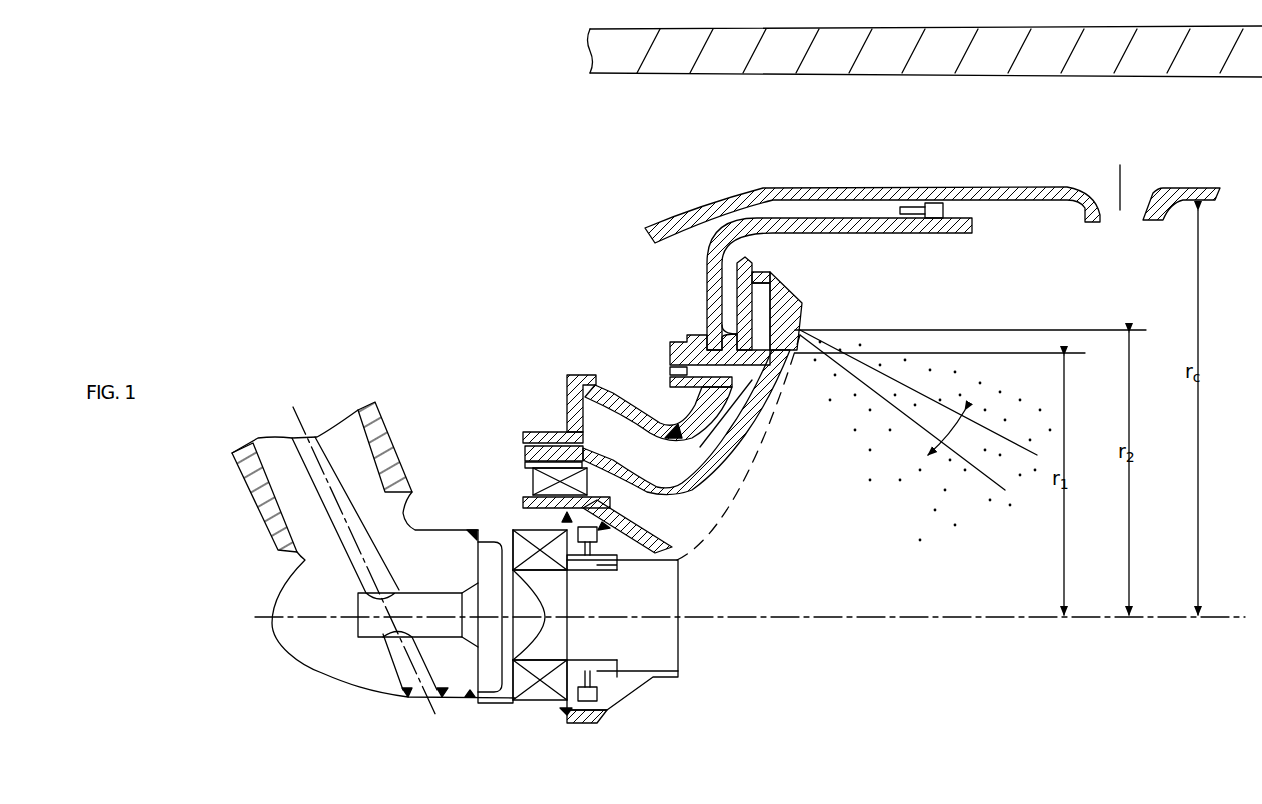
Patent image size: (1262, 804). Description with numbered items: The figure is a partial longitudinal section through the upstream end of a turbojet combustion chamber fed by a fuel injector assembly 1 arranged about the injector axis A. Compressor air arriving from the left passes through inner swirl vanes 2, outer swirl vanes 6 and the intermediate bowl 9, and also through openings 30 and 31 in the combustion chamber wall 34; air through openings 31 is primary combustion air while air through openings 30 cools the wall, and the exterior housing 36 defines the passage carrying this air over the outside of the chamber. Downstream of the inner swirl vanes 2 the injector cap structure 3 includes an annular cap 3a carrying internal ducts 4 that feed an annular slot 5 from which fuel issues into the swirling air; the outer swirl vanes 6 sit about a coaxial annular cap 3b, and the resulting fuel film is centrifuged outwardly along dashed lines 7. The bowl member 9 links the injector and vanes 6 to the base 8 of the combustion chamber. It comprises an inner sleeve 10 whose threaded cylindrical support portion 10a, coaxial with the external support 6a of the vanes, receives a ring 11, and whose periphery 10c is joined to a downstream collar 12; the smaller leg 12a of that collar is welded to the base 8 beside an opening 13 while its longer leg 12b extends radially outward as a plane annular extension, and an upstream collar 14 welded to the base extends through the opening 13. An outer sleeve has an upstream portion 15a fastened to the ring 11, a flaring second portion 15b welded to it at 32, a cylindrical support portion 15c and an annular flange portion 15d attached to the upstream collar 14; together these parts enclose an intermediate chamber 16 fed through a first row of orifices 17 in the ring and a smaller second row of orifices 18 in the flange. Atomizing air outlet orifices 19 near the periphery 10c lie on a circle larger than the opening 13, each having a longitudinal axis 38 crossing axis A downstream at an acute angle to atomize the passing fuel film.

The fuel injector assembly 1 is at (335, 660).
The inner swirl vanes 2 is at (537, 552).
The bearing housing 3 is at (619, 617).
The annular cap 3a is at (623, 563).
The annular cap 3b is at (655, 532).
The internal ducts 4 is at (585, 548).
The annular slot 5 is at (607, 672).
The outer swirl vanes 6 is at (540, 484).
The external support 6a is at (525, 455).
The dashed lines 7 is at (752, 490).
The base 8 is at (707, 262).
The bowl member 9 is at (688, 402).
The inner sleeve 10 is at (757, 410).
The first cylindrical support portion 10a is at (530, 448).
The periphery 10c is at (771, 281).
The ring 11 is at (535, 432).
The downstream collar 12 is at (753, 262).
The smaller leg 12a is at (788, 365).
The longer leg 12b is at (800, 292).
The opening 13 is at (770, 370).
The upstream collar 14 is at (775, 378).
The upstream portion 15a is at (596, 388).
The second portion 15b is at (702, 447).
The cylindrical support portion 15c is at (672, 378).
The annular flange portion 15d is at (673, 340).
The intermediate chamber 16 is at (735, 470).
The first row of orifices 17 is at (573, 394).
The second row of orifices 18 is at (672, 345).
The atomizing air outlet orifices 19 is at (798, 327).
The openings 30 is at (934, 203).
The openings 31 is at (1163, 182).
The weld 32 is at (672, 447).
The wall 34 is at (1020, 187).
The exterior housing 36 is at (727, 76).
The longitudinal axis 38 is at (985, 495).
The injector axis A is at (862, 615).